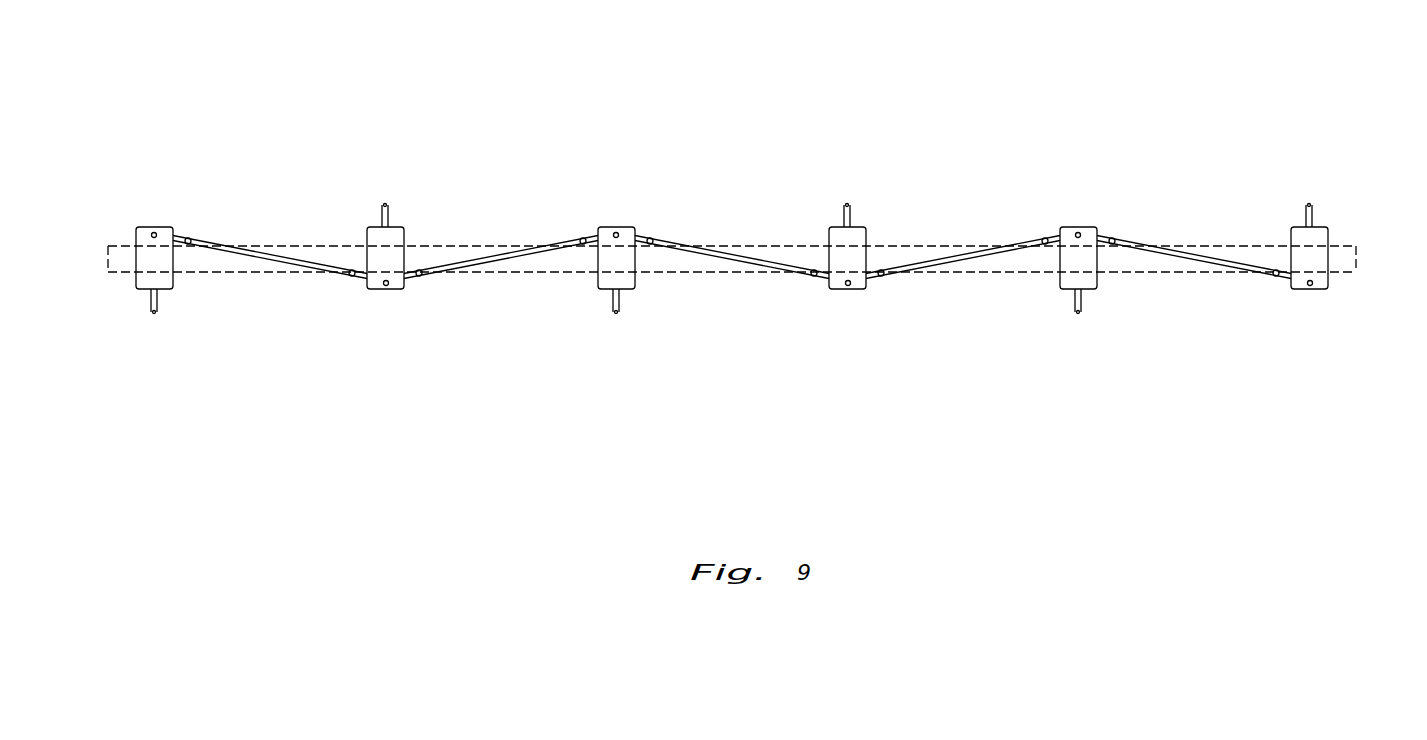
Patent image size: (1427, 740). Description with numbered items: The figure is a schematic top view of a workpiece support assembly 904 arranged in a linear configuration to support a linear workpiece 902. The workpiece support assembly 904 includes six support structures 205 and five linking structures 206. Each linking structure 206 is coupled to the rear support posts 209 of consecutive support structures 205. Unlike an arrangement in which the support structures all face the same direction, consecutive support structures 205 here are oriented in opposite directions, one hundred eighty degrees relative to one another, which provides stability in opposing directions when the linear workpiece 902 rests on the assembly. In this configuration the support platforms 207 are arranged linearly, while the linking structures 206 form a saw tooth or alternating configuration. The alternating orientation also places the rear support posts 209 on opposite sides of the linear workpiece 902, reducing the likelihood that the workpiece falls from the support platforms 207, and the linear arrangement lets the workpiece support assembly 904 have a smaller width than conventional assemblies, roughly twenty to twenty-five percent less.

The support structure 205 is at (153, 327).
The linking structure 206 is at (267, 250).
The support platform 207 is at (165, 282).
The rear support post 209 is at (156, 231).
The linear workpiece 902 is at (1357, 257).
The workpiece support assembly 904 is at (1112, 58).